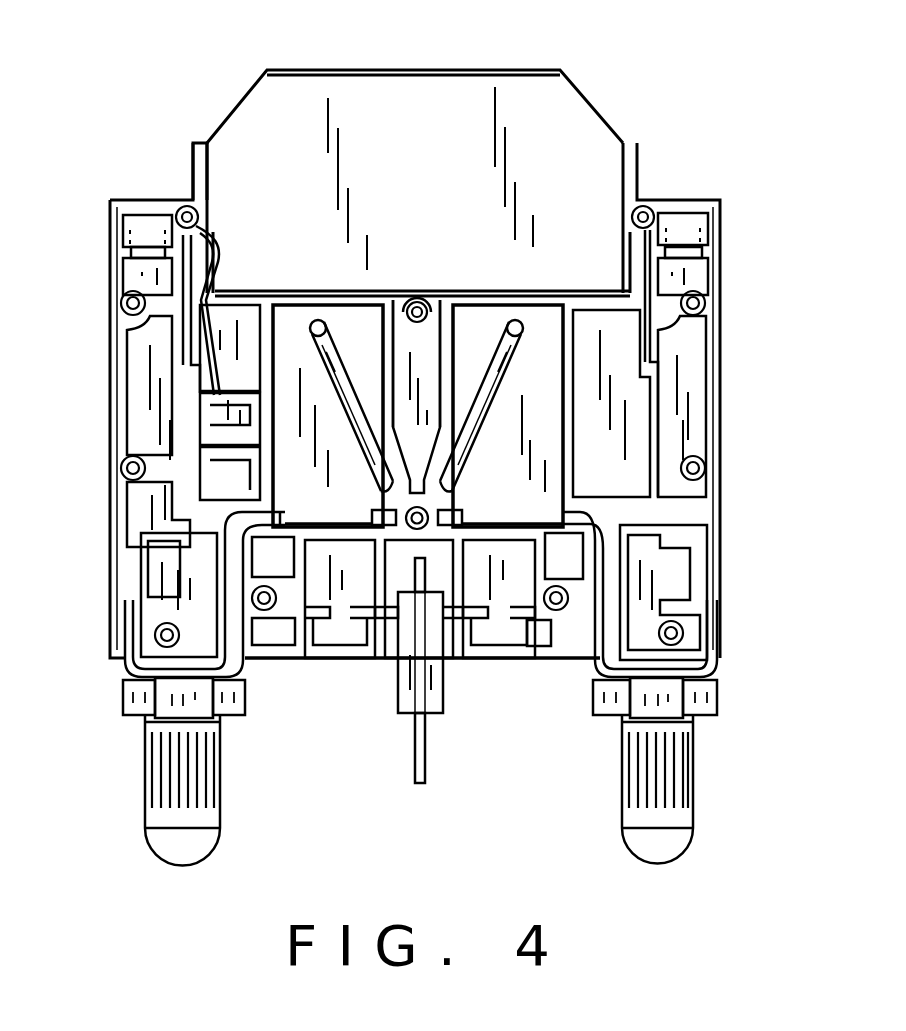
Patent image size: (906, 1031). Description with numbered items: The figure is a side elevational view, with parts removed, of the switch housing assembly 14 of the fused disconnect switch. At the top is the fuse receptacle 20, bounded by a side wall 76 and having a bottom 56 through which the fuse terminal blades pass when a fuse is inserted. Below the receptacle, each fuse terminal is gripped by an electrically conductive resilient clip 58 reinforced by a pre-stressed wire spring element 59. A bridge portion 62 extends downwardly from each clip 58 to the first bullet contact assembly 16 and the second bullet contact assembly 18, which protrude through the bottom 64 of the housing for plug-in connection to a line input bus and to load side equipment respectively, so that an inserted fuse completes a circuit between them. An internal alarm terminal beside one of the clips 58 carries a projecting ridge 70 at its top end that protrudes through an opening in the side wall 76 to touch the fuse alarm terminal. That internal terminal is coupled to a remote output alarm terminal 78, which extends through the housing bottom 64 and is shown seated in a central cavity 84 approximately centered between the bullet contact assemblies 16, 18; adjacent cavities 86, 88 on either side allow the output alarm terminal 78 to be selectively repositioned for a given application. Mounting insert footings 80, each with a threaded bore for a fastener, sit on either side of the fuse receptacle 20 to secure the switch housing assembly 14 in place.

The switch housing assembly 14 is at (683, 92).
The first bullet contact assembly 16 is at (153, 815).
The second bullet contact assembly 18 is at (670, 817).
The fuse receptacle 20 is at (446, 128).
The bottom of fuse receptacle 56 is at (404, 300).
The resilient clip 58 is at (296, 300).
The wire spring element 59 is at (334, 366).
The bridge portion 62 is at (227, 660).
The bottom of housing 64 is at (338, 663).
The projecting ridge 70 is at (217, 252).
The side wall of fuse receptacle 76 is at (200, 170).
The remote output alarm terminal 78 is at (415, 745).
The mounting insert footing 80 is at (137, 233).
The central cavity 84 is at (437, 563).
The adjacent cavity 86 is at (505, 640).
The adjacent cavity 88 is at (343, 637).